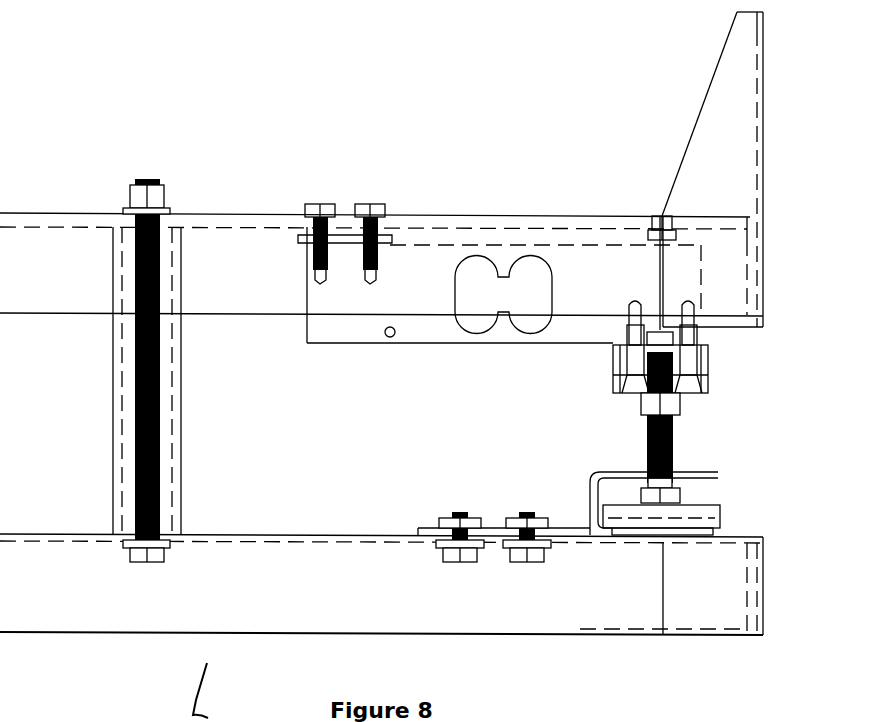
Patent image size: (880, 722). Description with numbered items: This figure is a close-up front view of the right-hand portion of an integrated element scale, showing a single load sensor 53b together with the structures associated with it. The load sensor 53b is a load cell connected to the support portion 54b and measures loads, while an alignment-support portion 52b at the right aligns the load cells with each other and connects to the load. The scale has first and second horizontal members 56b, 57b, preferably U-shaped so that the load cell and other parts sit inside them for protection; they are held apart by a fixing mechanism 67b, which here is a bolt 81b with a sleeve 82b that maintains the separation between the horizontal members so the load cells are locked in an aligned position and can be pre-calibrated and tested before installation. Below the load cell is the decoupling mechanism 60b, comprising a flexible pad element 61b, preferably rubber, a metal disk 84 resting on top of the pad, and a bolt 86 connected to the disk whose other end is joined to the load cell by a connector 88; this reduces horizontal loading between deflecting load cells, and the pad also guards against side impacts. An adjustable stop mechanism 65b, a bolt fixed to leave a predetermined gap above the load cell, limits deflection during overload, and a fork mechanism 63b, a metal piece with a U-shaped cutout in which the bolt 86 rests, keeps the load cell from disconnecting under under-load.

The alignment-support portion 52b is at (700, 113).
The adjustable stop mechanism 65b is at (660, 215).
The bolt 81b is at (150, 180).
The first horizontal member 56b is at (263, 238).
The connector 88 is at (703, 367).
The decoupling mechanism 60b is at (722, 413).
The bolt 86 is at (676, 455).
The disk 84 is at (713, 510).
The sleeve 82b is at (182, 385).
The fixing mechanism 67b is at (113, 408).
The support portion 54b is at (96, 533).
The load sensor 53b is at (368, 345).
The fork mechanism 63b is at (590, 472).
The flexible pad element 61b is at (633, 532).
The second horizontal member 57b is at (381, 602).